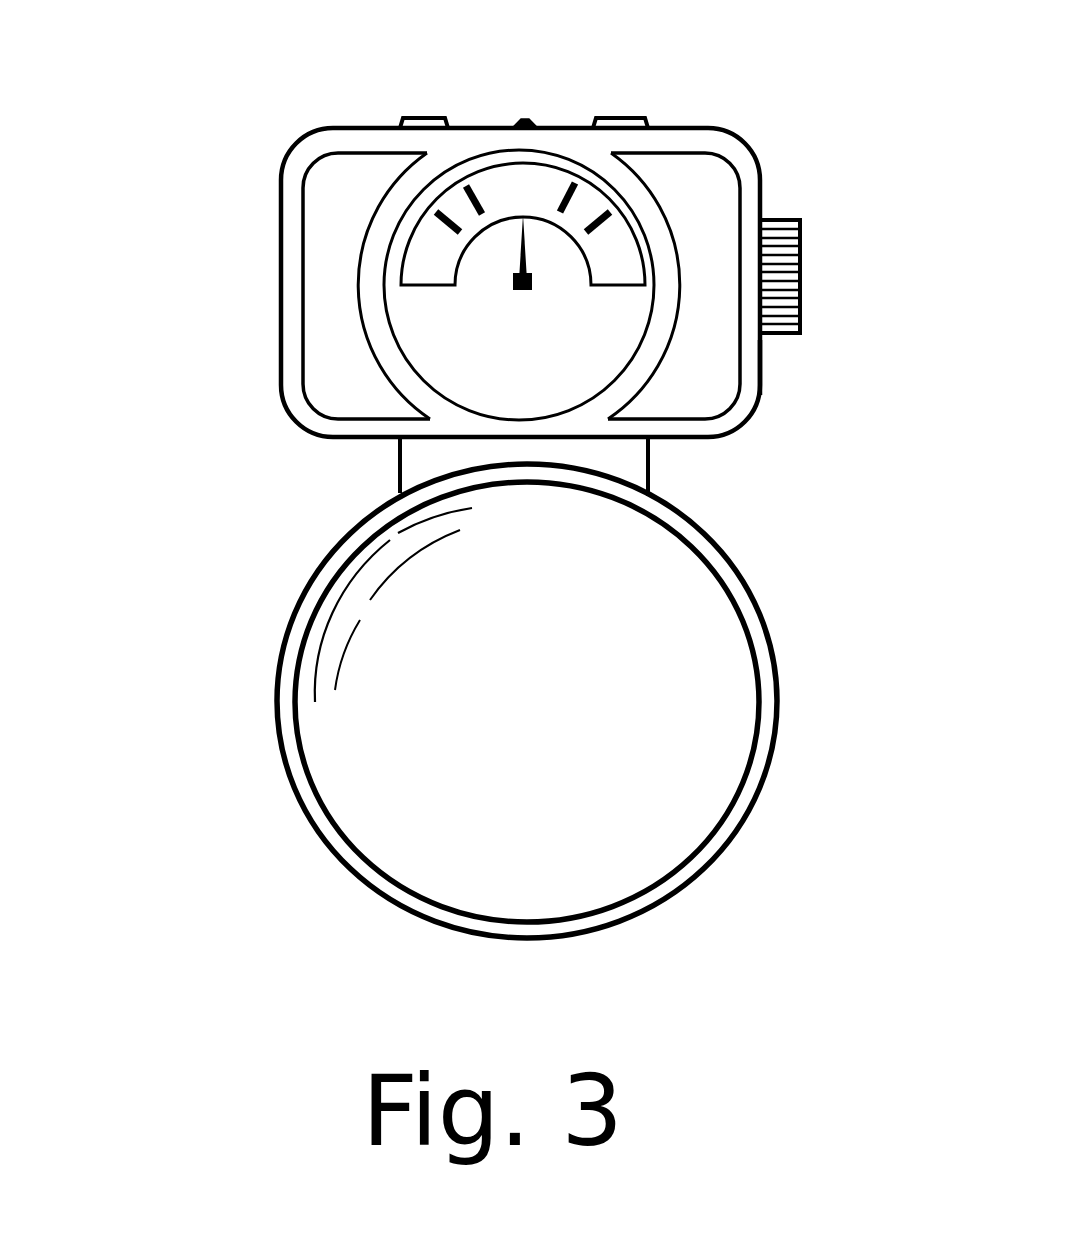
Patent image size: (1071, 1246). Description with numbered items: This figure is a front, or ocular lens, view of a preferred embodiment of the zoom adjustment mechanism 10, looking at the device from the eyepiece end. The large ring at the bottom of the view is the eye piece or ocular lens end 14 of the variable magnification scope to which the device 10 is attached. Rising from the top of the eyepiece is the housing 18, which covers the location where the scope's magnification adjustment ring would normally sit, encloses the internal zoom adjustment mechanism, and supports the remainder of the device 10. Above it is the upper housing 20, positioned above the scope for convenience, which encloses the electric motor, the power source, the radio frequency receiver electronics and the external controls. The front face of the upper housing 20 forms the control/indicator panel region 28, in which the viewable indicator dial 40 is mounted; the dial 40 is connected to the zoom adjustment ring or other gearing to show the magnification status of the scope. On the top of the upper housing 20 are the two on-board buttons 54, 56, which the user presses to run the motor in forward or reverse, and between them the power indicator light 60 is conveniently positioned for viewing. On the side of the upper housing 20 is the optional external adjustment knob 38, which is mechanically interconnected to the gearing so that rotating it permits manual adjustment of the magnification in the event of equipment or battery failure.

The zoom adjustment mechanism 10 is at (190, 443).
The eye piece or ocular lens end 14 is at (425, 782).
The housing 18 is at (615, 457).
The upper housing 20 is at (265, 150).
The control/indicator panel region 28 is at (763, 377).
The external adjustment knob 38 is at (800, 272).
The indicator dial 40 is at (435, 245).
The on-board button 54 is at (633, 116).
The on-board button 56 is at (425, 116).
The power indicator light 60 is at (523, 118).